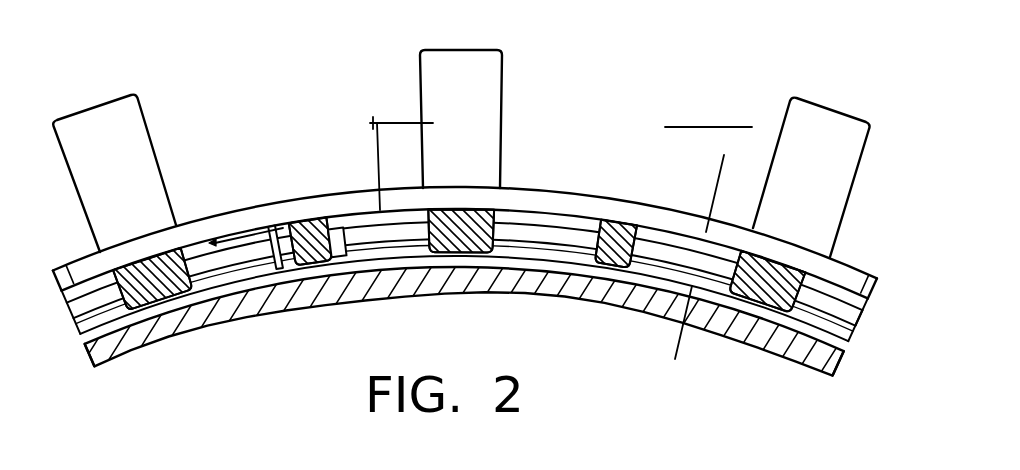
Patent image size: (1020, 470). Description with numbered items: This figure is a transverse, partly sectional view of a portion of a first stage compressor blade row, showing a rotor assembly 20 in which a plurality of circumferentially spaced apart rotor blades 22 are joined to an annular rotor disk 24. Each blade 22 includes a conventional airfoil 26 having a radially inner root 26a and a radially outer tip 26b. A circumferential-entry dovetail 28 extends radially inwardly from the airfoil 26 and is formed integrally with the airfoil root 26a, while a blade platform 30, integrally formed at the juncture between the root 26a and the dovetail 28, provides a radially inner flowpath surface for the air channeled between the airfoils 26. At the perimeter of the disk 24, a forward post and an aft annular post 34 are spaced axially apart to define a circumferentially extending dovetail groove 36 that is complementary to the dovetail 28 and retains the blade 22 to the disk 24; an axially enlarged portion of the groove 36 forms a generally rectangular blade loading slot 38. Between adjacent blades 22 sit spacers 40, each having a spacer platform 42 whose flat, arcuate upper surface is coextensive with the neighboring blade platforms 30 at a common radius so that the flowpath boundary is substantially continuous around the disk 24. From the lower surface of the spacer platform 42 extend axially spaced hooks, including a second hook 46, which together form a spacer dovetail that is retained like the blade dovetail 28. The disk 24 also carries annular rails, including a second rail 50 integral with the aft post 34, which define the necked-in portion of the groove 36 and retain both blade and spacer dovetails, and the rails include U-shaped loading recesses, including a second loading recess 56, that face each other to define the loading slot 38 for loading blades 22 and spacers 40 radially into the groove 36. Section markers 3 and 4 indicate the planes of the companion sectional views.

The rotor assembly 20 is at (667, 80).
The rotor blade 22 is at (137, 97).
The annular rotor disk 24 is at (192, 335).
The airfoil 26 is at (414, 131).
The airfoil root 26a is at (418, 114).
The airfoil tip 26b is at (440, 50).
The circumferential-entry dovetail 28 is at (424, 252).
The blade platform 30 is at (512, 200).
The second annular post 34 is at (855, 323).
The dovetail groove 36 is at (123, 356).
The blade loading slot 38 is at (271, 226).
The spacer 40 is at (617, 198).
The spacer platform 42 is at (357, 195).
The second hook 46 is at (597, 255).
The second annular rail 50 is at (837, 303).
The second loading recess 56 is at (278, 267).
The section line 3- 3 is at (722, 161).
The section line 4- 4 is at (739, 110).